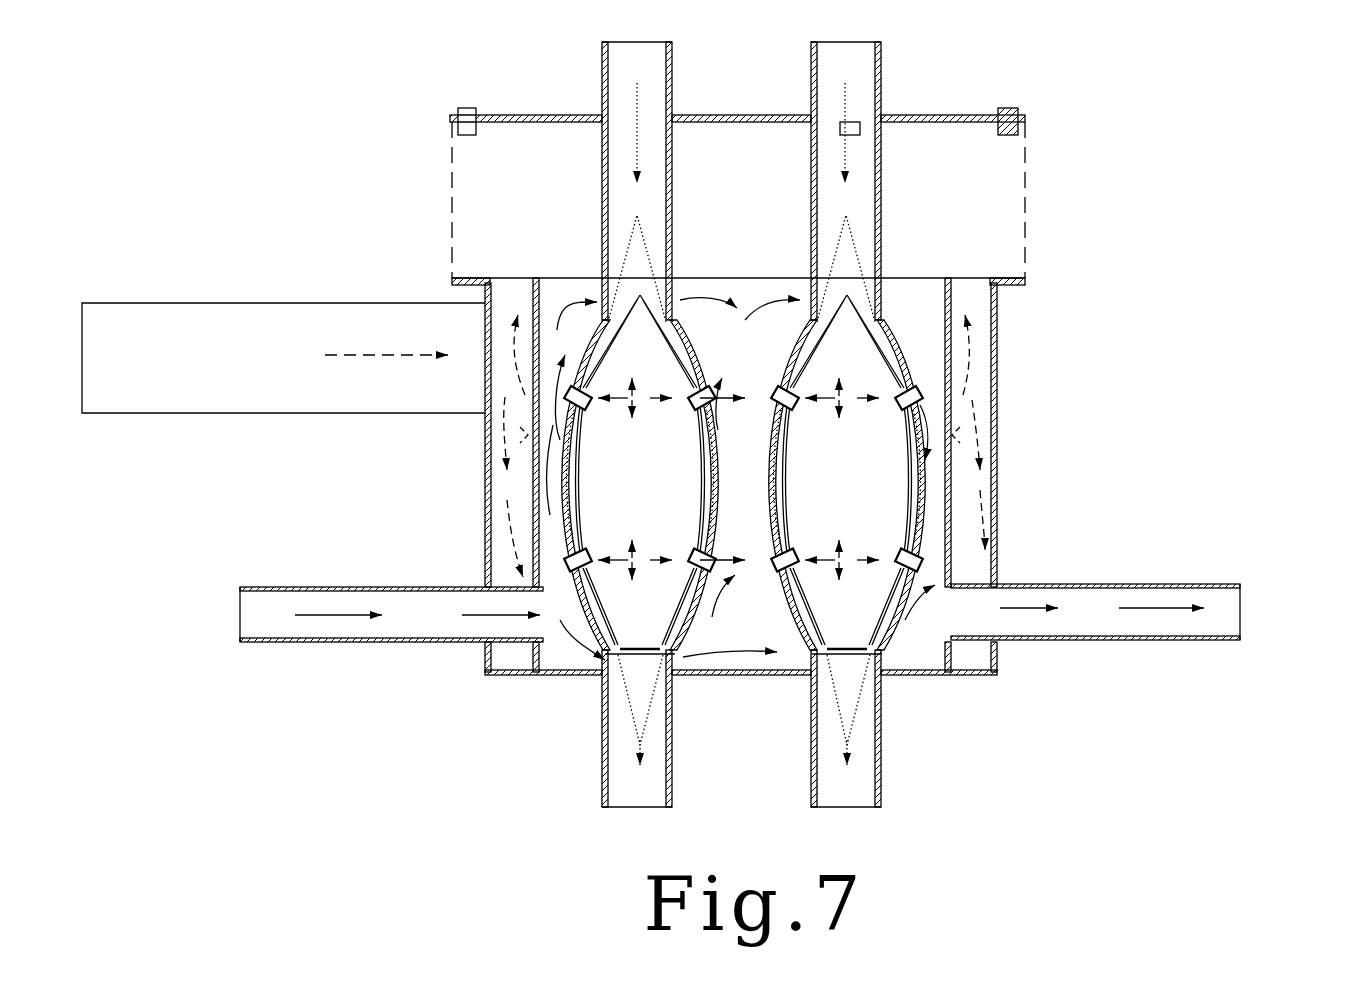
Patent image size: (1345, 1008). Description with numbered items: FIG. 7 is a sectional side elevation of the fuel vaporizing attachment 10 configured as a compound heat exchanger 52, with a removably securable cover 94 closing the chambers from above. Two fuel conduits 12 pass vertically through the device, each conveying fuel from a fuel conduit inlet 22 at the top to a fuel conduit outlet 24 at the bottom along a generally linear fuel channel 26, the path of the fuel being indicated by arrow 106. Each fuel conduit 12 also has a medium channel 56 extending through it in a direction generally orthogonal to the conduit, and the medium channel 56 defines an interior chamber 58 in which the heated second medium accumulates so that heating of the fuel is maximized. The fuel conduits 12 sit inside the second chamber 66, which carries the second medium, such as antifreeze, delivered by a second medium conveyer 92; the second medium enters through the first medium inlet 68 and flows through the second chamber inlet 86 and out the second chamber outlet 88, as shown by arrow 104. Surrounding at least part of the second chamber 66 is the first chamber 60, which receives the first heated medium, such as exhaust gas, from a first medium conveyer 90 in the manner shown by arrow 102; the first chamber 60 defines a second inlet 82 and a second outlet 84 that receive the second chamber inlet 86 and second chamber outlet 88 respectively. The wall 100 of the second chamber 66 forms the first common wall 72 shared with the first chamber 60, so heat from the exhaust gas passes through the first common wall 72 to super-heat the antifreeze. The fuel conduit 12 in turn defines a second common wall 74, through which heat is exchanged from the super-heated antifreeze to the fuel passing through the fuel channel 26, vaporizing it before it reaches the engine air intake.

The fuel vaporizing attachment 10 is at (1237, 427).
The fuel conduit 12 is at (593, 345).
The fuel conduit inlet 22 is at (656, 300).
The fuel conduit outlet 24 is at (623, 705).
The fuel channel 26 is at (777, 493).
The compound heat exchanger 52 is at (1154, 360).
The medium channel 56 is at (700, 392).
The interior chamber 58 is at (618, 498).
The first chamber 60 is at (1000, 338).
The second chamber 66 is at (950, 398).
The first medium inlet 68 is at (478, 422).
The first common wall 72 is at (535, 657).
The second common wall 74 is at (802, 637).
The second inlet 82 is at (480, 652).
The second outlet 84 is at (1004, 645).
The second chamber inlet 86 is at (527, 575).
The second chamber outlet 88 is at (958, 577).
The first medium conveyer 90 is at (253, 413).
The second medium conveyer 92 is at (287, 640).
The cover 94 is at (520, 115).
The wall of the second chamber 100 is at (970, 673).
The arrow 102 is at (365, 352).
The arrow 104 is at (482, 615).
The arrow 106 is at (847, 265).